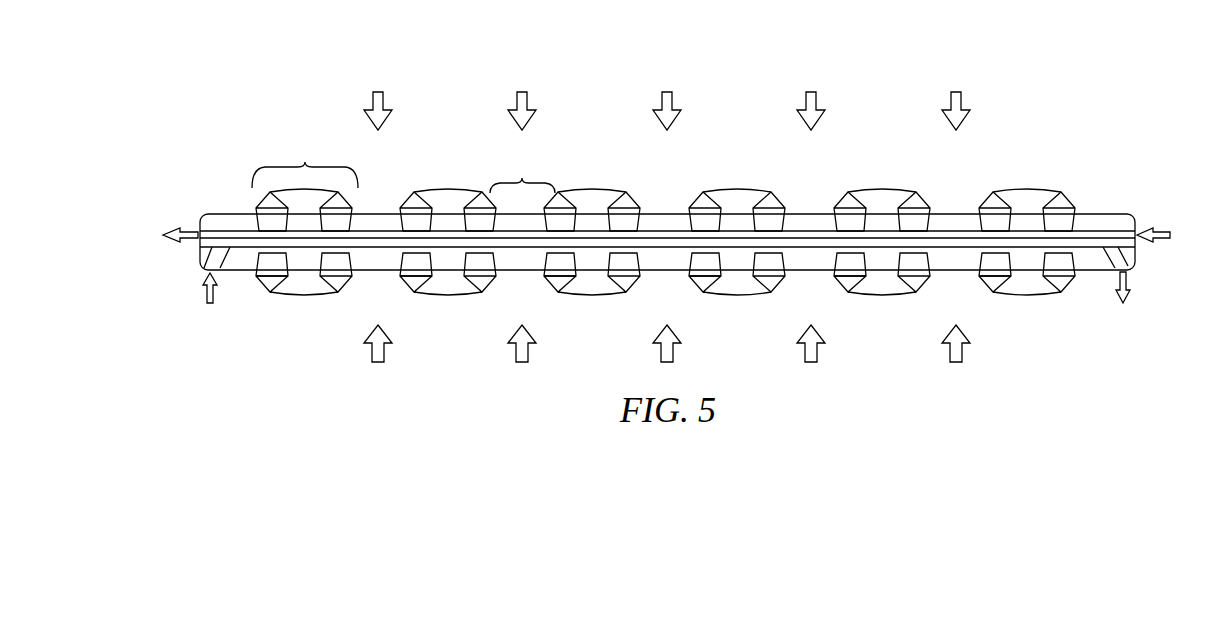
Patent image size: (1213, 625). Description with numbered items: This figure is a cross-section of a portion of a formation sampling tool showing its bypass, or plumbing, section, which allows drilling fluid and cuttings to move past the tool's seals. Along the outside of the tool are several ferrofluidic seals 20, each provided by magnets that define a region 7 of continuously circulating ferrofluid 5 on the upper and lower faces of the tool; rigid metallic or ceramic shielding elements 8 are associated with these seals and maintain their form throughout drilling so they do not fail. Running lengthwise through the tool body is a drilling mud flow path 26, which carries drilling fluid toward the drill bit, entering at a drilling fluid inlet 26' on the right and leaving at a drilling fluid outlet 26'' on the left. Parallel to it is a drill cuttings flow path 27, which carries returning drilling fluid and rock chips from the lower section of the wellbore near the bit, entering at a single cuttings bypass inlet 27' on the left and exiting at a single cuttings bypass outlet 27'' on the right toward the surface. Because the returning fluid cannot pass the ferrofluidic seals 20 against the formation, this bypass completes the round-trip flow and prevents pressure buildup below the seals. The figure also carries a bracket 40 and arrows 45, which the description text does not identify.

The ferrofluid 5 is at (309, 210).
The region of continuously circulating ferrofluid 7 is at (310, 296).
The shielding element 8 is at (260, 284).
The ferrofluidic seal 20 is at (305, 164).
The land region between protrusions 40 is at (522, 174).
The drilling mud flow path 26 is at (667, 219).
The drilling fluid inlet 26' is at (1168, 224).
The drilling fluid outlet 26'' is at (185, 207).
The drill cuttings flow path 27 is at (667, 284).
The cuttings bypass inlet 27' is at (178, 283).
The cuttings bypass outlet 27'' is at (1154, 286).
The compression force arrows 45 is at (384, 96).